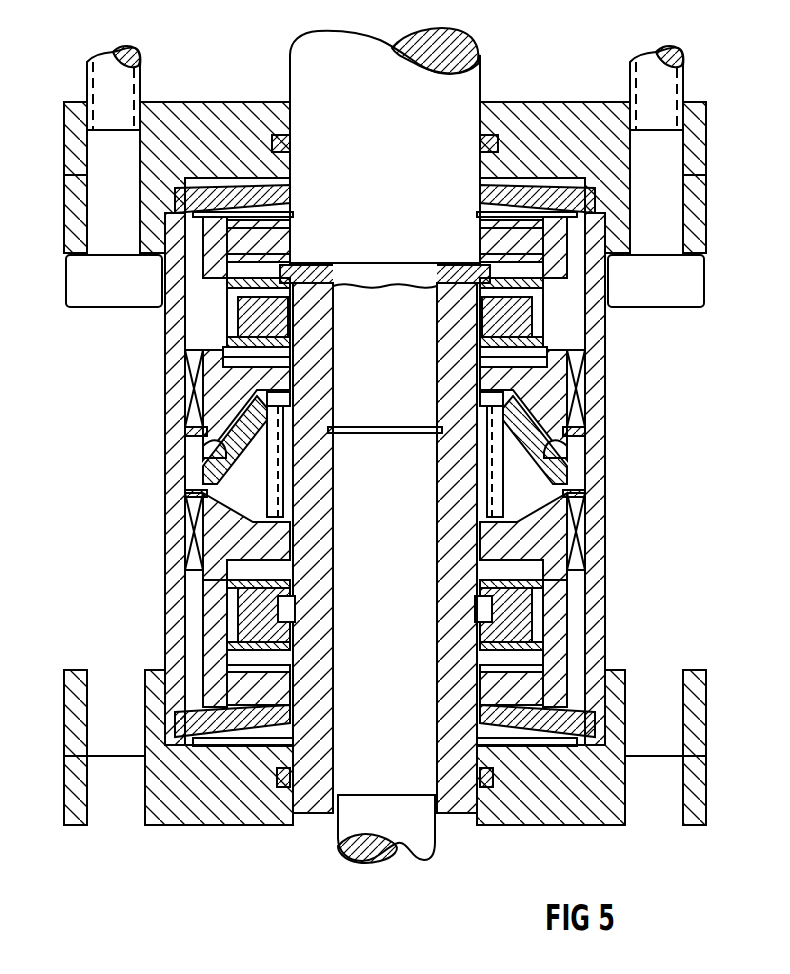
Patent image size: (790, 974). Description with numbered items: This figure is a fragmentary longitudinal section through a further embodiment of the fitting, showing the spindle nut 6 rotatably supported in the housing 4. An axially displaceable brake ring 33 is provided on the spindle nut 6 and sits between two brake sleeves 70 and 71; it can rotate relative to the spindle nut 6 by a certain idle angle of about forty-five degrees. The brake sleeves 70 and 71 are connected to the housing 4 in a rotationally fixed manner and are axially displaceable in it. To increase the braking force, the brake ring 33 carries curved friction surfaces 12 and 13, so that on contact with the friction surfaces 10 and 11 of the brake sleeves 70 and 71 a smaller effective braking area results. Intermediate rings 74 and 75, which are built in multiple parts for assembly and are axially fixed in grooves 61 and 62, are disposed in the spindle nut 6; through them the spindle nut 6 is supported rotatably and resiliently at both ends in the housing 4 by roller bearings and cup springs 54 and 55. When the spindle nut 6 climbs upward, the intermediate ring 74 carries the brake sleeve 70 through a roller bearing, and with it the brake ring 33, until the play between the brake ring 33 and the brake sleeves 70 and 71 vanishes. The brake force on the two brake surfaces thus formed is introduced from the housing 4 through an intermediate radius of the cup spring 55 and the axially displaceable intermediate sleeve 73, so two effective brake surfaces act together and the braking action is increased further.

The housing 4 is at (598, 540).
The spindle nut 6 is at (462, 518).
The friction surface 10 is at (200, 494).
The friction surface 11 is at (200, 434).
The friction surface 12 is at (222, 476).
The friction surface 13 is at (223, 455).
The brake ring 33 is at (553, 462).
The cup spring 54 is at (278, 710).
The cup spring 55 is at (278, 200).
The groove 61 is at (290, 598).
The groove 62 is at (447, 322).
The brake sleeve 70 is at (220, 543).
The brake sleeve 71 is at (218, 378).
The intermediate sleeve 73 is at (557, 312).
The intermediate ring 74 is at (283, 612).
The intermediate ring 75 is at (283, 311).